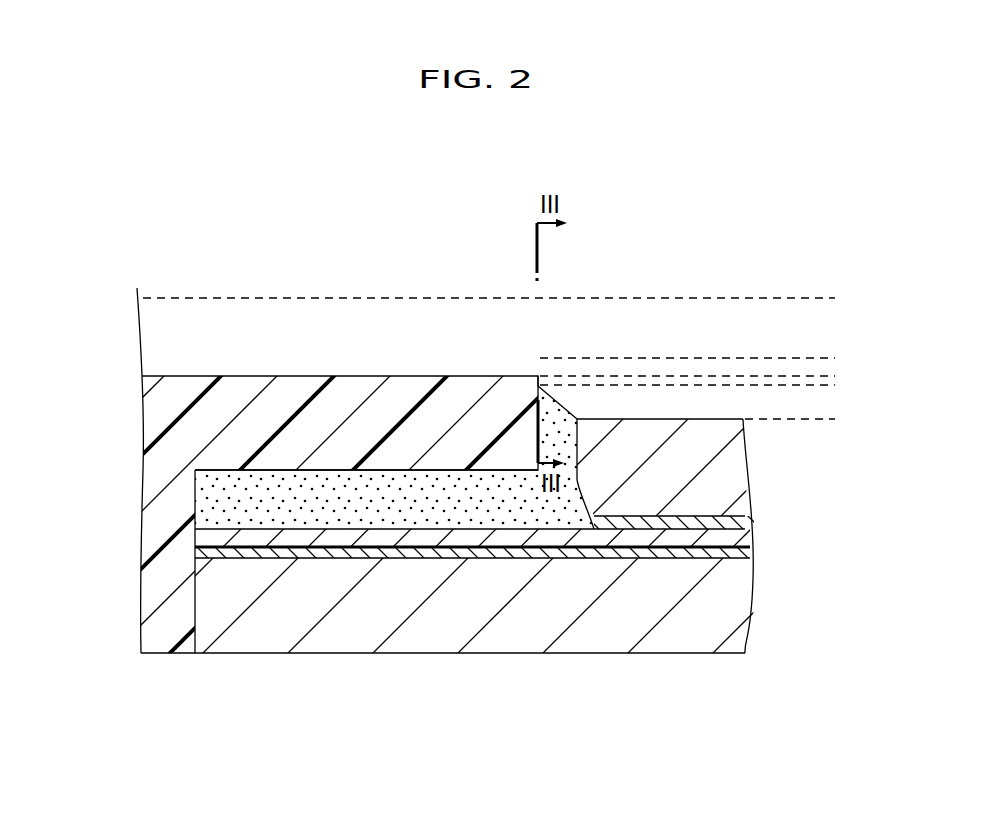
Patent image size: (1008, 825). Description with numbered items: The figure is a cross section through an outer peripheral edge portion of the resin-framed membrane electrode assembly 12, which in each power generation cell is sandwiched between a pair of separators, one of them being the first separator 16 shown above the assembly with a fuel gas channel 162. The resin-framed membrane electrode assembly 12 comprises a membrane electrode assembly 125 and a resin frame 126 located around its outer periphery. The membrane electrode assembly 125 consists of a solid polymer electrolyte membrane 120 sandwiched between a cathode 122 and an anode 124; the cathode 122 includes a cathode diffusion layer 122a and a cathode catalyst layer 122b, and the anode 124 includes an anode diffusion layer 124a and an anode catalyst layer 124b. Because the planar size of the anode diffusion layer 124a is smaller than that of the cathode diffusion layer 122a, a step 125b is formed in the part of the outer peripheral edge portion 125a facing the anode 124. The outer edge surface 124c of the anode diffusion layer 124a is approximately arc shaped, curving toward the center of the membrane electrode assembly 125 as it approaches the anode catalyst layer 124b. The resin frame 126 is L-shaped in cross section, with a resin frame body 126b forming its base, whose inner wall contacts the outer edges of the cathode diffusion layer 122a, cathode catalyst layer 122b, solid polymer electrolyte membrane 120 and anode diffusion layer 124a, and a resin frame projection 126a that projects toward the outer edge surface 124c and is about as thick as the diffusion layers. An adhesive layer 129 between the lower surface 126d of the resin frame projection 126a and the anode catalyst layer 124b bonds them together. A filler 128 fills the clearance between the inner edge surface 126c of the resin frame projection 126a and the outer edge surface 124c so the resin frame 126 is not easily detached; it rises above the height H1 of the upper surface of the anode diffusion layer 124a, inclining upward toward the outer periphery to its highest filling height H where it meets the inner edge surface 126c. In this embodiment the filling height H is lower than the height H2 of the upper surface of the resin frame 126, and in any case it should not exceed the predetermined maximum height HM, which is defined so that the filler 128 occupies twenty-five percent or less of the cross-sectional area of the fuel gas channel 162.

The resin-framed membrane electrode assembly 12 is at (603, 145).
The first separator 16 is at (327, 298).
The fuel gas channel 162 is at (250, 323).
The solid polymer electrolyte membrane 120 is at (740, 547).
The cathode 122 is at (824, 548).
The cathode diffusion layer 122a is at (733, 615).
The cathode catalyst layer 122b is at (740, 555).
The anode 124 is at (824, 445).
The anode diffusion layer 124a is at (727, 457).
The anode catalyst layer 124b is at (740, 523).
The outer edge surface 124c is at (573, 512).
The membrane electrode assembly 125 is at (872, 472).
The outer peripheral edge portion 125a is at (660, 215).
The step 125b is at (584, 285).
The resin frame 126 is at (62, 392).
The resin frame projection 126a is at (310, 432).
The resin frame body 126b is at (172, 557).
The inner edge surface 126c is at (548, 392).
The lower surface 126d is at (386, 478).
The filler 128 is at (558, 437).
The adhesive layer 129 is at (318, 507).
The predetermined maximum height HM is at (826, 358).
The filling height H is at (826, 385).
The height of the upper surface of the anode diffusion layer H1 is at (826, 419).
The height of the upper surface of the resin frame H2 is at (826, 376).